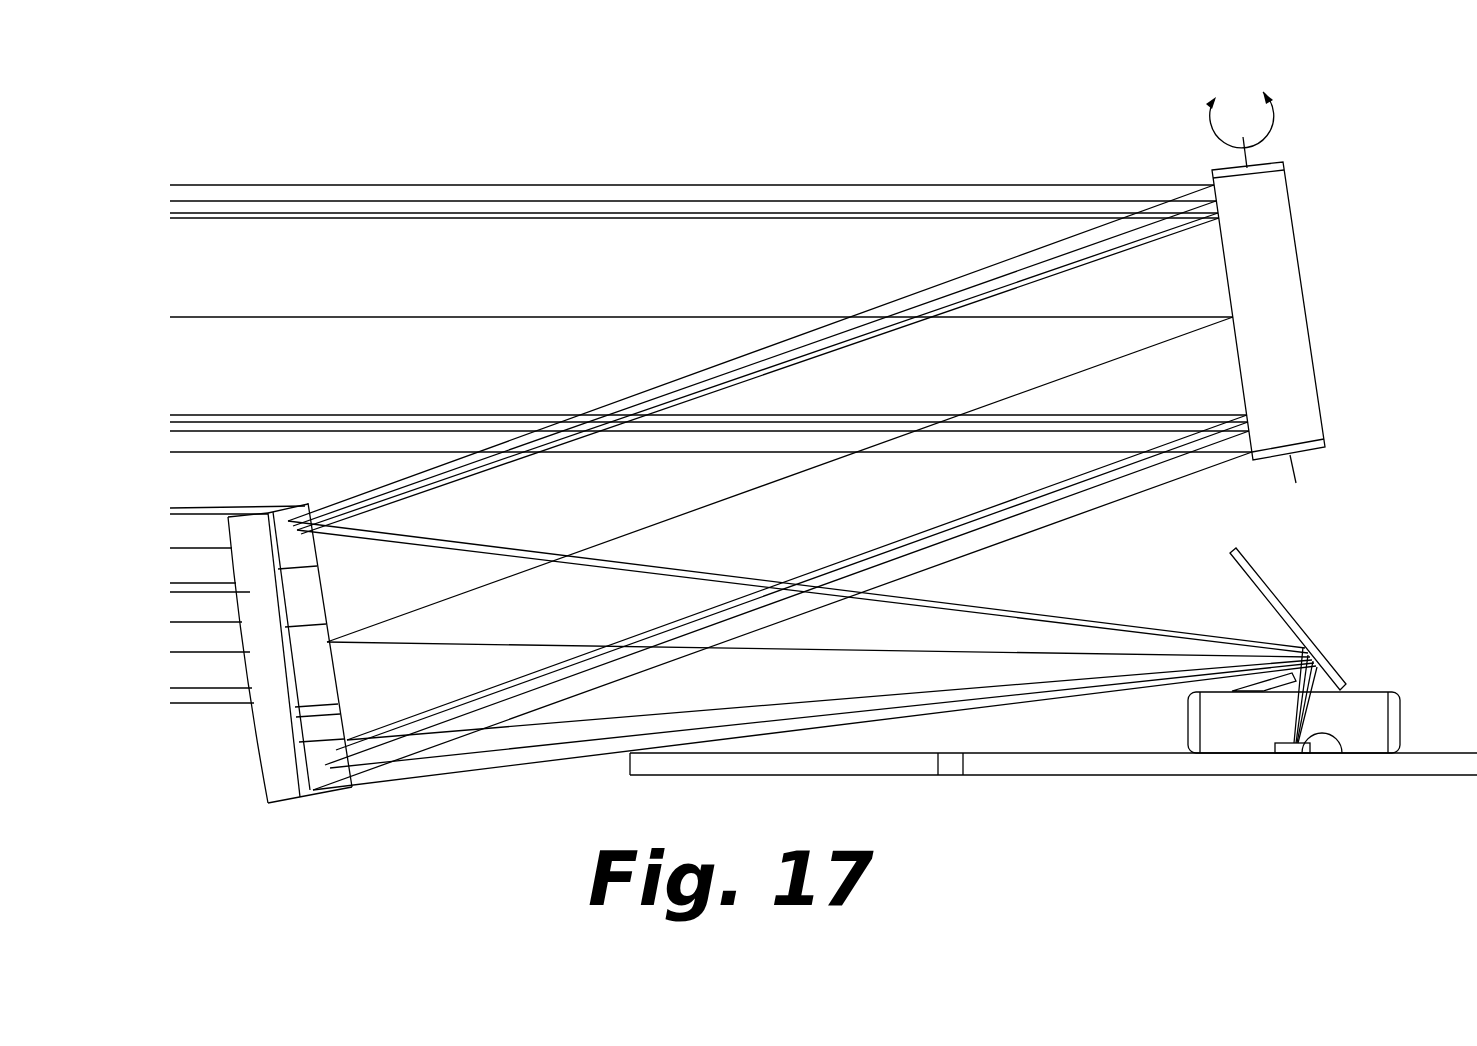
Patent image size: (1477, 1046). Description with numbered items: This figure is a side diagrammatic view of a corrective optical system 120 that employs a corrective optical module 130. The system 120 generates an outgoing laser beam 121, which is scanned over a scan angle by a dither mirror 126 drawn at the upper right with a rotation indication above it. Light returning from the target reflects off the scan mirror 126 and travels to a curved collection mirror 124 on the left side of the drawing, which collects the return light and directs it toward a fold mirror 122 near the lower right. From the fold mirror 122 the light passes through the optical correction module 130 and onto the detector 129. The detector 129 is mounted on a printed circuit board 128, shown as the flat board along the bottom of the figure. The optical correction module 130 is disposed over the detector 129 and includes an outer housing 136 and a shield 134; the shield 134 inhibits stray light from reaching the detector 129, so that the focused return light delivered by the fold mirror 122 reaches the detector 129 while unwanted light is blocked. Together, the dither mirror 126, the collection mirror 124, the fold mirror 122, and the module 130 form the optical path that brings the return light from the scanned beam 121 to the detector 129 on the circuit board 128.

The system 120 is at (1038, 125).
The outgoing laser beam 121 is at (1073, 375).
The fold mirror 122 is at (1248, 563).
The curved collection mirror 124 is at (280, 803).
The dither mirror 126 is at (1295, 227).
The printed circuit board 128 is at (1051, 765).
The detector 129 is at (1338, 748).
The corrective optical module 130 is at (1374, 688).
The shield 134 is at (1253, 684).
The outer housing 136 is at (1400, 727).